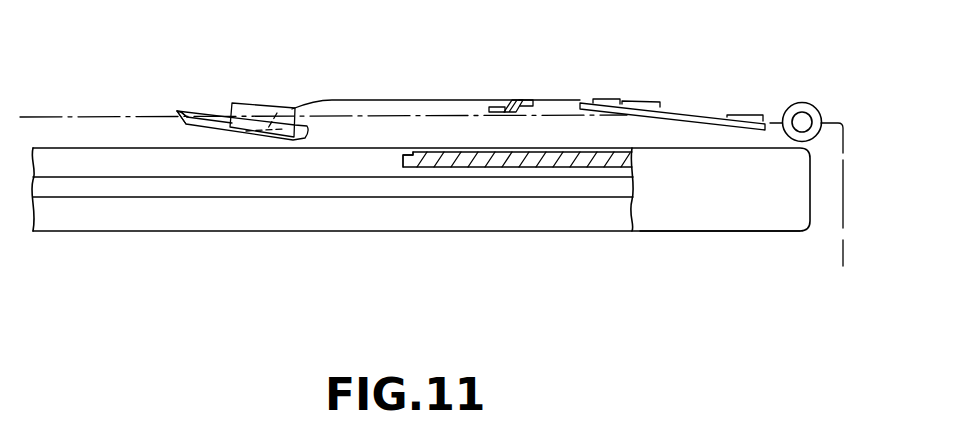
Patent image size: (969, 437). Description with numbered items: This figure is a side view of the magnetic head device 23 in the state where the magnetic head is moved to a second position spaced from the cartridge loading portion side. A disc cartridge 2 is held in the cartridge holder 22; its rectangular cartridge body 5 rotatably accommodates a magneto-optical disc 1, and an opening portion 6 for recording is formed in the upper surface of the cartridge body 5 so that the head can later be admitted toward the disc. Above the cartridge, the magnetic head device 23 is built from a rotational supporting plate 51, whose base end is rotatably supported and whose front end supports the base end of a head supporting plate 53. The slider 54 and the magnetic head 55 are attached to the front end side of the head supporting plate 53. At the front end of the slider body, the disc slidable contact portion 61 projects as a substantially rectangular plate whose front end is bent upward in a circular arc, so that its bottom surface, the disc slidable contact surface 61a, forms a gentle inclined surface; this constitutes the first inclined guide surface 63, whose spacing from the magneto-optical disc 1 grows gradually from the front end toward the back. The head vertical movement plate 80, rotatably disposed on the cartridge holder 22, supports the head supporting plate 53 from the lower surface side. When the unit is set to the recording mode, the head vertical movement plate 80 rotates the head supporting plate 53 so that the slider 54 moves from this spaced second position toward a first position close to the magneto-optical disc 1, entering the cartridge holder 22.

The magneto-optical disc 1 is at (512, 190).
The disc cartridge 2 is at (790, 248).
The cartridge body 5 is at (690, 233).
The opening portion for recording 6 is at (393, 172).
The cartridge holder 22 is at (847, 170).
The magnetic head device 23 is at (742, 92).
The rotational supporting plate 51 is at (672, 113).
The head supporting plate 53 is at (323, 98).
The slider 54 is at (260, 117).
The magnetic head 55 is at (277, 113).
The disc slidable contact portion 61 is at (207, 120).
The disc slidable contact surface 61a is at (200, 129).
The first inclined guide surface 63 is at (172, 118).
The head vertical movement plate 80 is at (511, 100).